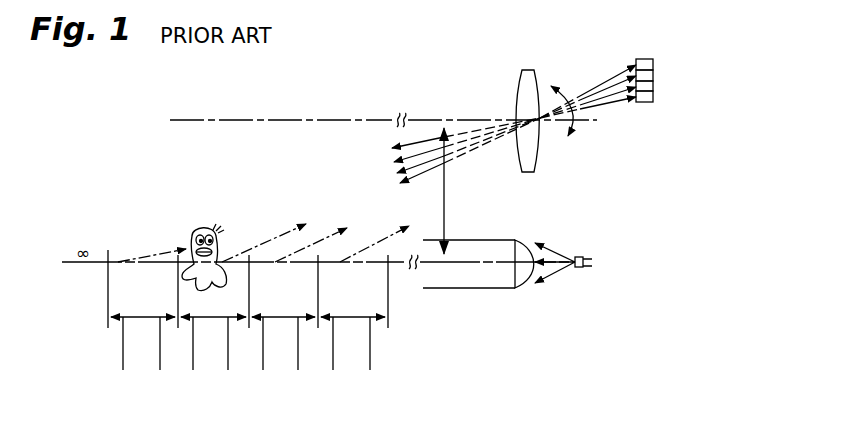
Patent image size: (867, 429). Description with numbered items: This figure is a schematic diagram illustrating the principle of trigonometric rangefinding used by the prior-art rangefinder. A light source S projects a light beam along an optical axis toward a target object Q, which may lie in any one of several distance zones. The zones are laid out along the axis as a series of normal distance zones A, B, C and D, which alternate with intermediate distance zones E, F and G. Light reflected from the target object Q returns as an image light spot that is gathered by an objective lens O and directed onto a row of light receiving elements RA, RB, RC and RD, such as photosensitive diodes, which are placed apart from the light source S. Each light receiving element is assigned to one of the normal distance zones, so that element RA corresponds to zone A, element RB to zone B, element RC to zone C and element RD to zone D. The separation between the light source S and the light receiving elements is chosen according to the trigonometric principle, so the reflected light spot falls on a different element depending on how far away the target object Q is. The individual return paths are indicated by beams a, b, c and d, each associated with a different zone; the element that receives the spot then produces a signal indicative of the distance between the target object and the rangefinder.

The target object Q is at (208, 228).
The objective lens O is at (544, 121).
The light source S is at (580, 255).
The light receiving element RA is at (653, 62).
The light receiving element RB is at (653, 74).
The light receiving element RC is at (653, 86).
The light receiving element RD is at (653, 99).
The light beam a is at (380, 238).
The light beam b is at (313, 237).
The light beam c is at (264, 237).
The light beam d is at (152, 245).
The normal distance zone A is at (351, 361).
The normal distance zone B is at (280, 361).
The normal distance zone C is at (210, 361).
The normal distance zone D is at (142, 361).
The intermediate distance zone E is at (314, 361).
The intermediate distance zone F is at (245, 361).
The intermediate distance zone G is at (176, 361).